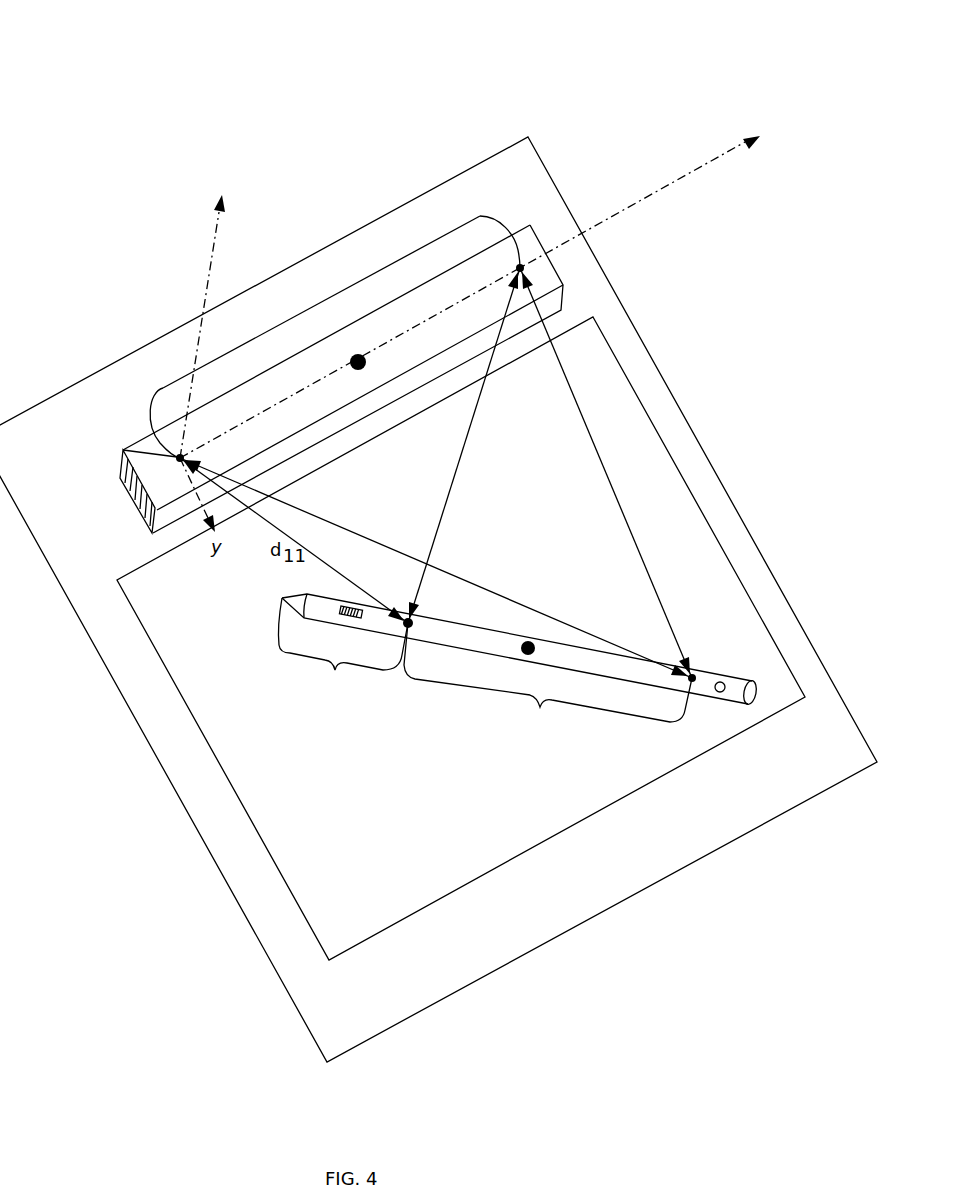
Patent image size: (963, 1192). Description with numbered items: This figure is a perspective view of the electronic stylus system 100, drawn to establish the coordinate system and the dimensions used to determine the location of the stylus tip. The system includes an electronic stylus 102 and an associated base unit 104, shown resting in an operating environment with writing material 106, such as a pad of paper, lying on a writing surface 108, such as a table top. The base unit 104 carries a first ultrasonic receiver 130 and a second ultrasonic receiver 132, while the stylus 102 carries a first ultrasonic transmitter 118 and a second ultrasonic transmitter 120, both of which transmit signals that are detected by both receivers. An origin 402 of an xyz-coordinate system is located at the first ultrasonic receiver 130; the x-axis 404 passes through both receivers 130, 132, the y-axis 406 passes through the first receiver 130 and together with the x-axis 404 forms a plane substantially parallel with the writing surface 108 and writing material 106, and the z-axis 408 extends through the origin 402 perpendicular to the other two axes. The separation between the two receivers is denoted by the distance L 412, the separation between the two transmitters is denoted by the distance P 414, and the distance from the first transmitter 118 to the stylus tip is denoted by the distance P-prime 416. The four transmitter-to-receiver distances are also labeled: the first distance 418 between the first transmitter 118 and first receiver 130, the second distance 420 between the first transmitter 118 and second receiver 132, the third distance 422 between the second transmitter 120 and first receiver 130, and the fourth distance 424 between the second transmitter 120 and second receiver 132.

The electronic stylus system 100 is at (100, 74).
The electronic stylus 102 is at (735, 683).
The electronic stylus base unit 104 is at (520, 262).
The writing material 106 is at (275, 768).
The writing surface 108 is at (290, 944).
The first ultrasonic transmitter 118 is at (408, 623).
The second ultrasonic transmitter 120 is at (692, 678).
The first ultrasonic receiver 130 is at (124, 450).
The second ultrasonic receiver 132 is at (522, 268).
The origin 402 is at (128, 512).
The x-axis 404 is at (655, 192).
The y-axis 406 is at (85, 573).
The z-axis 408 is at (213, 253).
The distance L 412 is at (257, 343).
The distance P 414 is at (540, 707).
The distance P' 416 is at (335, 670).
The distance d11 418 is at (215, 596).
The distance d12 420 is at (457, 473).
The distance d21 422 is at (563, 625).
The distance d22 424 is at (629, 528).